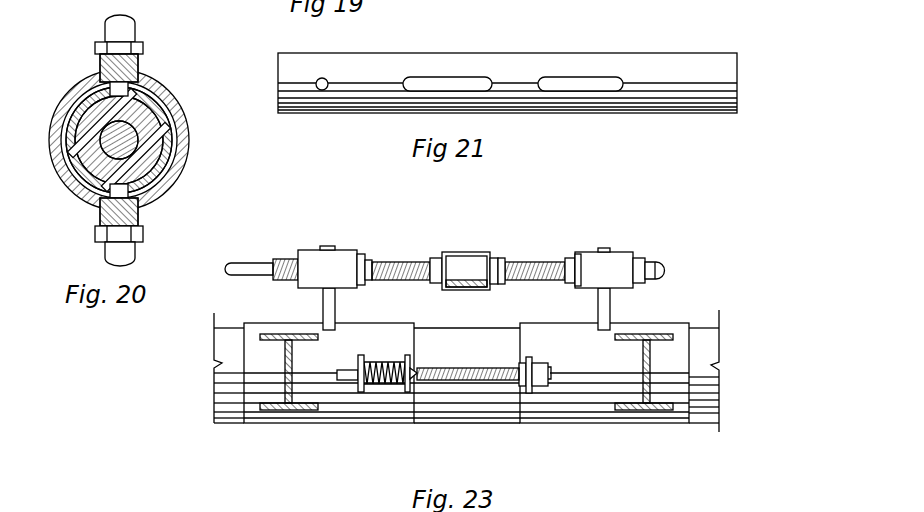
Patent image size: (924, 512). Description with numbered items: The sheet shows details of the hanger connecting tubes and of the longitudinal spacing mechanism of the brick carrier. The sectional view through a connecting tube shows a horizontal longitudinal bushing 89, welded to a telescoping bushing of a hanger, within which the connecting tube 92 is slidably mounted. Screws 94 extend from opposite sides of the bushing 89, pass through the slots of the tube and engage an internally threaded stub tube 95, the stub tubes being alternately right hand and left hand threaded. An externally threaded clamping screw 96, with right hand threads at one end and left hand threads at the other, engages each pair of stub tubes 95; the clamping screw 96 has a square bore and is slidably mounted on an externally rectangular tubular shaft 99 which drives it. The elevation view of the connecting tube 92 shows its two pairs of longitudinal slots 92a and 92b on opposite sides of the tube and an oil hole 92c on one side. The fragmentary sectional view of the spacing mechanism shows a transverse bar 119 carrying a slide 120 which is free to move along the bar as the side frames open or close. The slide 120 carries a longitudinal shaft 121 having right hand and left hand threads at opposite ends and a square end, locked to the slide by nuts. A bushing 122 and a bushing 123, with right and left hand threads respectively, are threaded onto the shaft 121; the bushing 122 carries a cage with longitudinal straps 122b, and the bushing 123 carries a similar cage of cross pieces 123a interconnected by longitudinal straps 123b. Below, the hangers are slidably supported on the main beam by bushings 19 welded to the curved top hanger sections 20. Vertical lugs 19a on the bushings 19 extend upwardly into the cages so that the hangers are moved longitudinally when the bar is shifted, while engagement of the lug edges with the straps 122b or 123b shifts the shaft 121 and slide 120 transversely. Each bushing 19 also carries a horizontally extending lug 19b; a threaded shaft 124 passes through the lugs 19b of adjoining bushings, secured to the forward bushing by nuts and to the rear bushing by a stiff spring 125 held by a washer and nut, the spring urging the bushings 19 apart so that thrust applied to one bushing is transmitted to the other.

In FIG. 20, the longitudinal bushing 89 is at (56, 115).
In FIG. 20, the connecting tube 92 is at (168, 170).
In FIG. 21, the connecting tube 92 is at (532, 61).
In FIG. 21, the longitudinal slots 92a is at (448, 84).
In FIG. 21, the longitudinal slots 92b is at (588, 87).
In FIG. 21, the oil hole 92c is at (322, 77).
In FIG. 20, the screw 94 is at (152, 8).
In FIG. 20, the stub tube 95 is at (144, 103).
In FIG. 20, the clamping screw 96 is at (149, 132).
In FIG. 20, the tubular shaft 99 is at (152, 143).
In FIG. 23, the bushing 19 is at (345, 424).
In FIG. 23, the vertical lug 19a is at (606, 311).
In FIG. 23, the horizontally extending lug 19b is at (360, 364).
In FIG. 23, the curved top hanger section 20 is at (291, 342).
In FIG. 23, the transverse bar 119 is at (470, 289).
In FIG. 23, the slide 120 is at (462, 262).
In FIG. 23, the longitudinal shaft 121 is at (420, 261).
In FIG. 23, the bushing 122 is at (298, 257).
In FIG. 23, the longitudinal strap 122b is at (311, 258).
In FIG. 23, the bushing 123 is at (641, 265).
In FIG. 23, the cross piece 123a is at (578, 256).
In FIG. 23, the longitudinal strap 123b is at (619, 261).
In FIG. 23, the threaded shaft 124 is at (474, 382).
In FIG. 23, the spring 125 is at (385, 360).